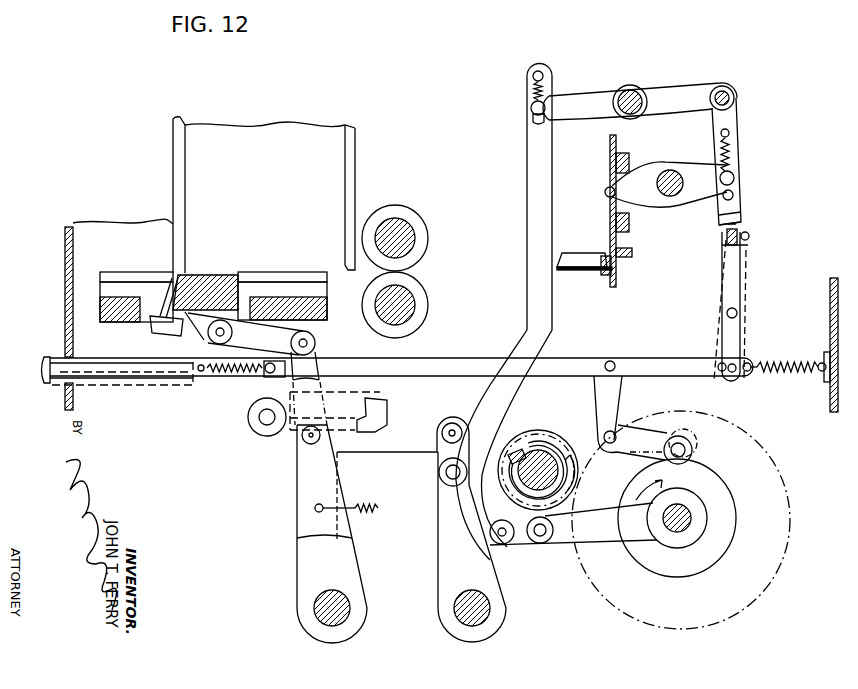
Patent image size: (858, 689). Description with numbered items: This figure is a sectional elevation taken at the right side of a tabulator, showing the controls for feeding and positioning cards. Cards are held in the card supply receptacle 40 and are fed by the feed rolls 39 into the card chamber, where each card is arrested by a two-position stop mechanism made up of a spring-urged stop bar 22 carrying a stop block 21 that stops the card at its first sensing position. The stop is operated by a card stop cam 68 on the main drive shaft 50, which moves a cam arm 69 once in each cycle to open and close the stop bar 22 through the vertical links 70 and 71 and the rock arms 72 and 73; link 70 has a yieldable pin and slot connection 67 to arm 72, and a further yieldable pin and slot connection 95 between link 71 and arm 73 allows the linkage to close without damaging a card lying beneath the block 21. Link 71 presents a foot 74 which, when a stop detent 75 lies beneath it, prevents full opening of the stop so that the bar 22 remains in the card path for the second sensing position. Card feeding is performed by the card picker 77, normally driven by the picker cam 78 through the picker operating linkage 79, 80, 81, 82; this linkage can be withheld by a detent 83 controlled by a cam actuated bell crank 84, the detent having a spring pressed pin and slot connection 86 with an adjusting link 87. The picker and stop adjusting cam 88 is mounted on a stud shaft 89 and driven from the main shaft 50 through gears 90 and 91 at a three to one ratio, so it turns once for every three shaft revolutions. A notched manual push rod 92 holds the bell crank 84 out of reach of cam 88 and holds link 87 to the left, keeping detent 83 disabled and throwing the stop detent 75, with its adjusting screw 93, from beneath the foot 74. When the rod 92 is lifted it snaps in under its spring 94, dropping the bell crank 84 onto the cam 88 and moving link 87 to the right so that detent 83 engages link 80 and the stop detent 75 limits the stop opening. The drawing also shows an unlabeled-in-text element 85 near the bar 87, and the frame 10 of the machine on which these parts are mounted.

The frame 10 is at (571, 275).
The stop block 21 is at (603, 251).
The stop bar 22 is at (618, 272).
The feed rolls 39 is at (413, 218).
The card supply receptacle 40 is at (271, 211).
The main drive shaft 50 is at (535, 462).
The yieldable pin and slot connection 67 is at (528, 106).
The card stop cam 68 is at (553, 447).
The cam arm 69 is at (606, 534).
The vertical link 70 is at (532, 164).
The vertical link 71 is at (728, 119).
The rock arm 72 is at (597, 91).
The rock arm 73 is at (645, 172).
The foot 74 is at (736, 222).
The stop detent 75 is at (742, 276).
The card picker 77 is at (205, 278).
The picker cam 78 is at (495, 412).
The picker operating linkage 79 is at (448, 568).
The picker operating linkage 80 is at (417, 443).
The picker operating linkage 81 is at (300, 478).
The picker operating linkage 82 is at (305, 566).
The detent 83 is at (375, 409).
The bell crank 84 is at (643, 436).
The bell crank 85 is at (618, 366).
The spring pressed pin and slot connection 86 is at (266, 378).
The adjusting link 87 is at (442, 367).
The picker and stop adjusting cam 88 is at (722, 520).
The stud shaft 89 is at (685, 505).
The gear 90 is at (505, 441).
The gear 91 is at (755, 461).
The manual push rod 92 is at (100, 380).
The adjusting screw 93 is at (748, 237).
The spring 94 is at (785, 363).
The yieldable pin and slot connection 95 is at (734, 178).